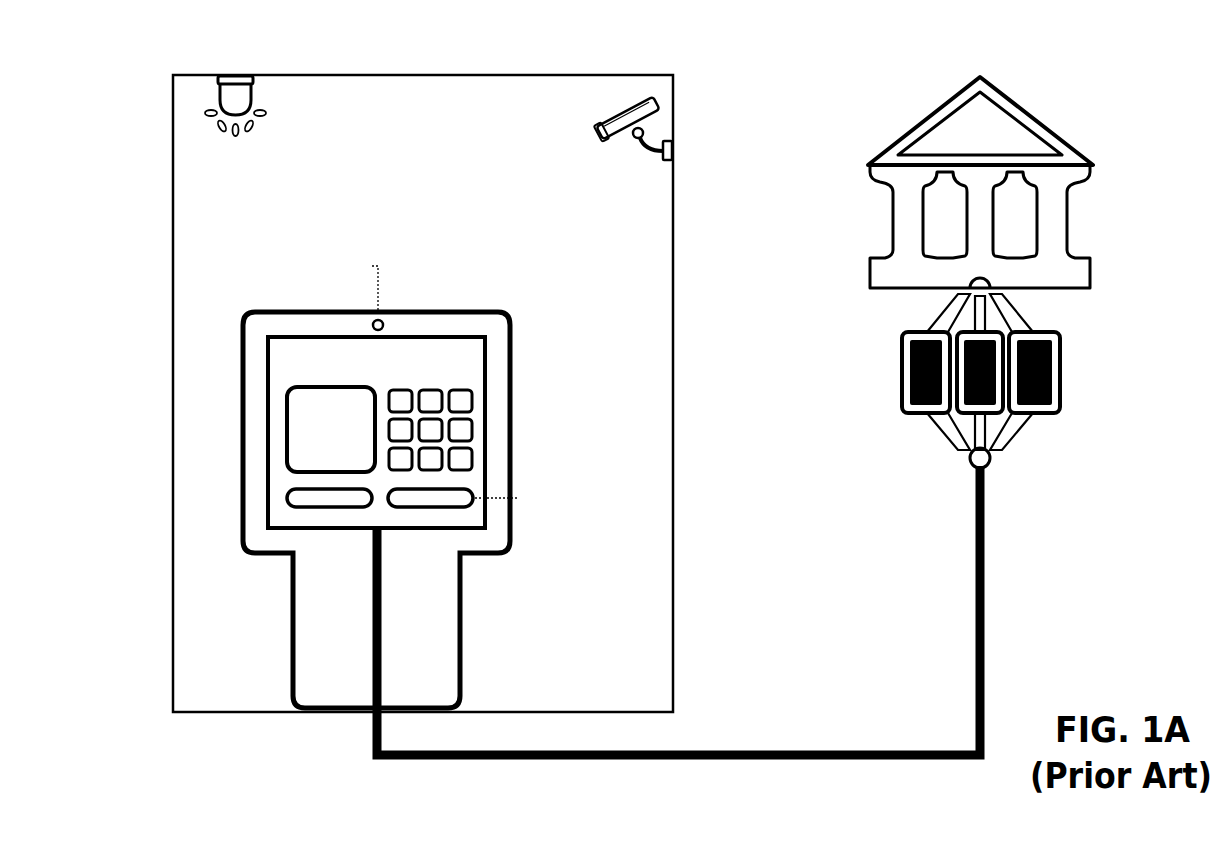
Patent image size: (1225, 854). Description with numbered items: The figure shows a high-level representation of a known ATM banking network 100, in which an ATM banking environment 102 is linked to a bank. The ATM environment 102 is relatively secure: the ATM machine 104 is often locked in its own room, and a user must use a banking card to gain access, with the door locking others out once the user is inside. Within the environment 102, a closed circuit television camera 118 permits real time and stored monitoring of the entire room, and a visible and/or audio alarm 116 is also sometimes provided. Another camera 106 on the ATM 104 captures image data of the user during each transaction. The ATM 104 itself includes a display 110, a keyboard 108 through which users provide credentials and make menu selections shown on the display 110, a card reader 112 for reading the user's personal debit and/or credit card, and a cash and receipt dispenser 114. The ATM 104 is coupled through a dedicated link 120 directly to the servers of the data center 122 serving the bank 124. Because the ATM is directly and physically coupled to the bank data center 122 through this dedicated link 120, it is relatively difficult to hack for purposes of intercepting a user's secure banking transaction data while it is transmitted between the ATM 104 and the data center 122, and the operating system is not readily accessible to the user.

The prior art ATM system 100 is at (1122, 62).
The ATM banking environment 102 is at (658, 71).
The ATM machine 104 is at (460, 303).
The camera 106 is at (368, 311).
The keyboard 108 is at (472, 383).
The display 110 is at (333, 380).
The card reader 112 is at (474, 486).
The cash and receipt dispenser 114 is at (278, 485).
The alarm 116 is at (276, 125).
The closed circuit television (CCTV) camera 118 is at (573, 144).
The dedicated link 120 is at (765, 745).
The data center 122 is at (1068, 347).
The bank 124 is at (1086, 215).